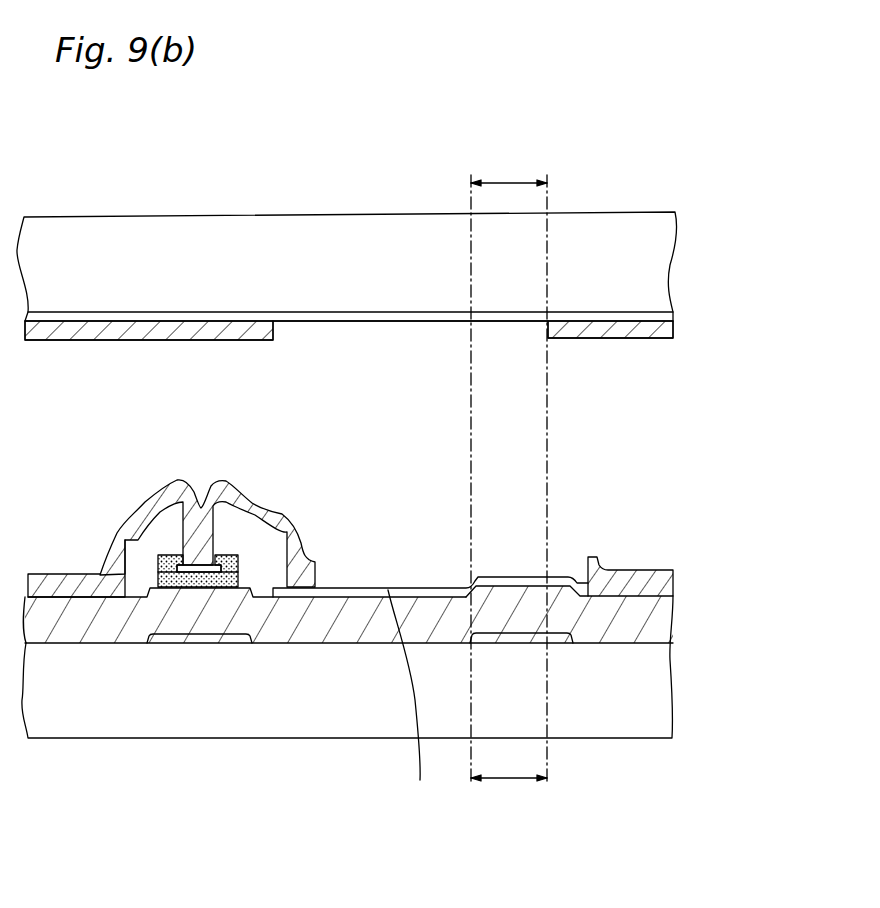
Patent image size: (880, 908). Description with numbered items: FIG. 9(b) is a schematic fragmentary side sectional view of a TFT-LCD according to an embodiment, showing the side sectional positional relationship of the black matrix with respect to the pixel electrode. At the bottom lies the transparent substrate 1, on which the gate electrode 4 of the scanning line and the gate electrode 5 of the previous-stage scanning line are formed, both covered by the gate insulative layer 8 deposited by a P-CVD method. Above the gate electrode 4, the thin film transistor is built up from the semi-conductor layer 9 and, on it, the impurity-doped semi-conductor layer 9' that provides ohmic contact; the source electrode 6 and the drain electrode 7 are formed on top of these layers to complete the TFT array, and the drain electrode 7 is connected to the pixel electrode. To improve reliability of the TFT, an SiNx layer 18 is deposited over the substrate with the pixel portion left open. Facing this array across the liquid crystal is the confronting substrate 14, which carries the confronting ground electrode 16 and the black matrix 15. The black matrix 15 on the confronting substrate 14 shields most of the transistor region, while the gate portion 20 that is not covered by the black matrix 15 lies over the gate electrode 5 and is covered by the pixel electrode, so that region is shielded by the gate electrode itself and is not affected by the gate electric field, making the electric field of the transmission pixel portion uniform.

The transparent substrate 1 is at (132, 705).
The gate electrode 4 is at (203, 642).
The gate electrode at previous stage 5 is at (527, 640).
The source electrode 6 is at (140, 567).
The drain electrode 7 is at (232, 518).
The gate insulative layer 8 is at (613, 613).
The semi-conductor layer 9 is at (134, 688).
The semi-conductor layer doped with impurities 9' is at (151, 500).
The confronting substrate 14 is at (575, 247).
The black matrix 15 is at (578, 322).
The confronting ground electrode 16 is at (638, 313).
The SiNx layer 18 is at (637, 582).
The gate portion 20 is at (509, 467).